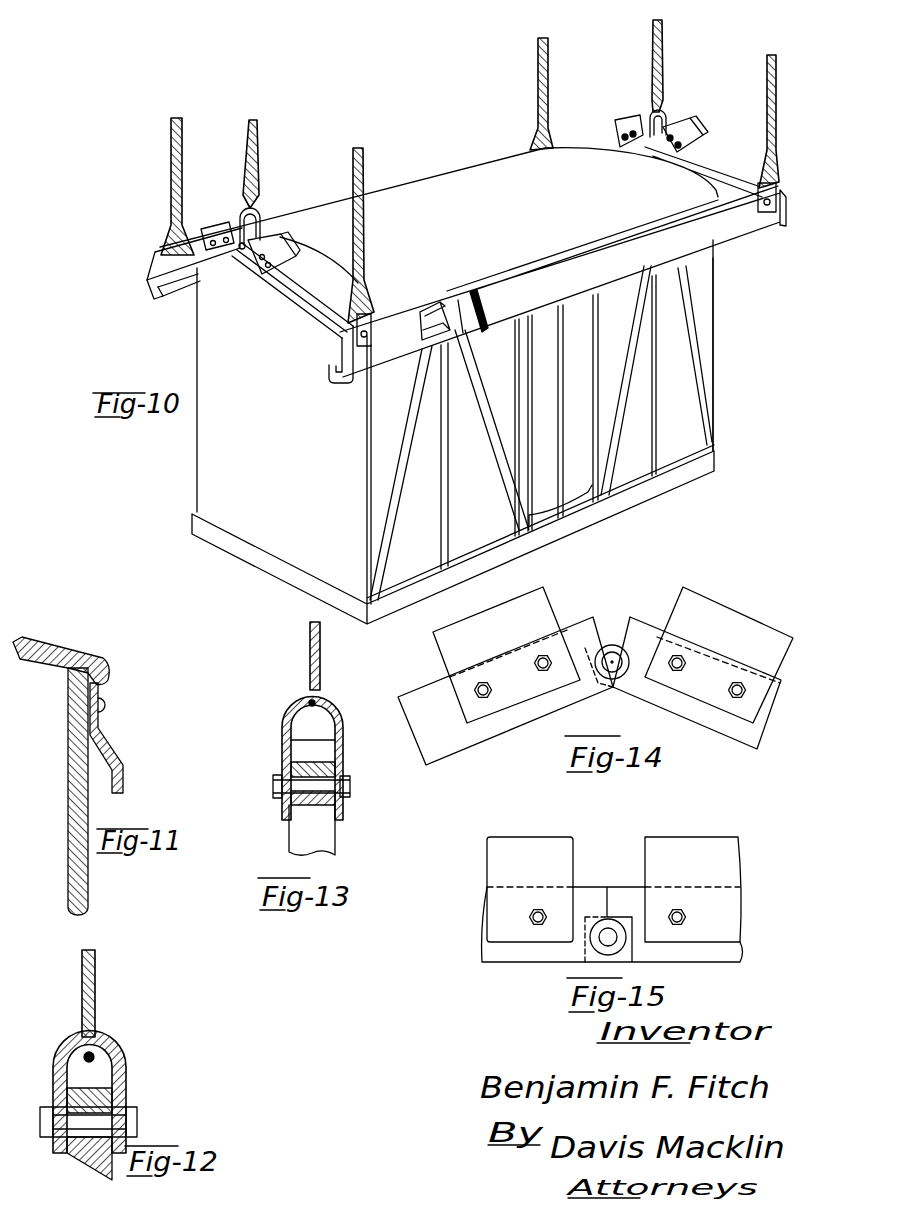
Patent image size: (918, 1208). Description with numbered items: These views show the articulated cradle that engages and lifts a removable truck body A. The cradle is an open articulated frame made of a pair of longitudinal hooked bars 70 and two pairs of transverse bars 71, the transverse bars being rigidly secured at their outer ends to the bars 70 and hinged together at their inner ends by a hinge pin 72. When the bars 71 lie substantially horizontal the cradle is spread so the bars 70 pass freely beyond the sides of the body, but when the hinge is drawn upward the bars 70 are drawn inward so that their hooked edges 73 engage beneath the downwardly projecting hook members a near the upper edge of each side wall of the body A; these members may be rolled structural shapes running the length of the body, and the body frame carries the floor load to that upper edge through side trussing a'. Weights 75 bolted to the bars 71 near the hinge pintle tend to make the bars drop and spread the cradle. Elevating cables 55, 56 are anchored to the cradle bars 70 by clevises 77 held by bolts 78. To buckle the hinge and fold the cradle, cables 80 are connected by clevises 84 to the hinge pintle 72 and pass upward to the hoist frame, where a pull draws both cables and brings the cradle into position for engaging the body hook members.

In FIG. 10, the elevating cable 55 is at (546, 77).
In FIG. 10, the elevating cable 56 is at (177, 150).
In FIG. 12, the elevating cable 56 is at (95, 992).
In FIG. 10, the longitudinal hooked bar 70 is at (143, 307).
In FIG. 12, the longitudinal hooked bar 70 is at (80, 1173).
In FIG. 10, the transverse bar 71 is at (250, 283).
In FIG. 13, the transverse bar 71 is at (325, 806).
In FIG. 14, the transverse bar 71 is at (705, 737).
In FIG. 15, the transverse bar 71 is at (612, 924).
In FIG. 10, the hinge pin 72 is at (239, 255).
In FIG. 13, the hinge pin 72 is at (349, 772).
In FIG. 14, the hinge pin 72 is at (610, 647).
In FIG. 15, the hinge pin 72 is at (612, 927).
In FIG. 10, the hooked edge 73 is at (165, 287).
In FIG. 10, the weight 75 is at (213, 227).
In FIG. 14, the weight 75 is at (613, 655).
In FIG. 15, the weight 75 is at (614, 889).
In FIG. 12, the clevis 77 is at (124, 1057).
In FIG. 12, the bolt 78 is at (115, 1127).
In FIG. 10, the buckling cable 80 is at (257, 142).
In FIG. 13, the buckling cable 80 is at (309, 647).
In FIG. 10, the clevis 84 is at (262, 217).
In FIG. 13, the clevis 84 is at (344, 713).
In FIG. 10, the removable truck body A is at (453, 432).
In FIG. 11, the removable truck body A is at (68, 770).
In FIG. 10, the rolled structural hook member a is at (441, 305).
In FIG. 11, the rolled structural hook member a is at (110, 738).
In FIG. 10, the side trussing a' is at (401, 473).